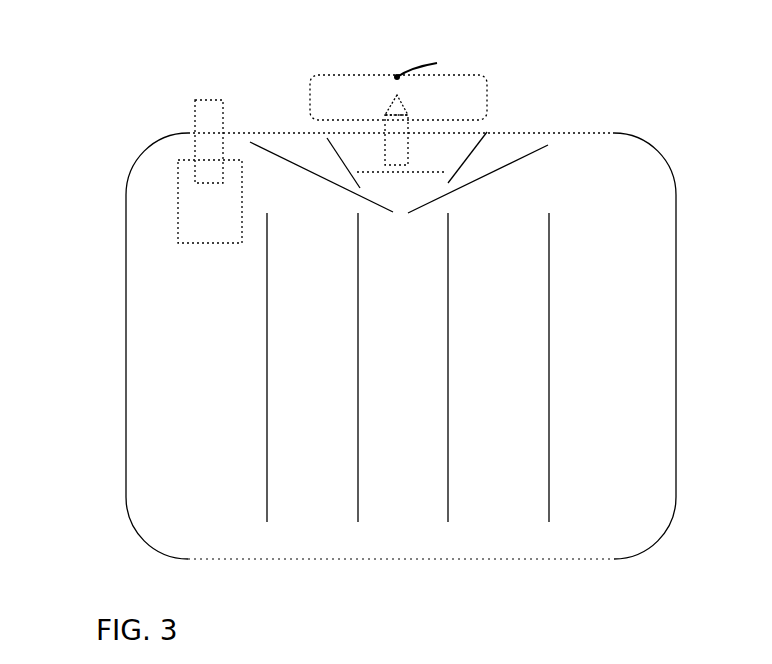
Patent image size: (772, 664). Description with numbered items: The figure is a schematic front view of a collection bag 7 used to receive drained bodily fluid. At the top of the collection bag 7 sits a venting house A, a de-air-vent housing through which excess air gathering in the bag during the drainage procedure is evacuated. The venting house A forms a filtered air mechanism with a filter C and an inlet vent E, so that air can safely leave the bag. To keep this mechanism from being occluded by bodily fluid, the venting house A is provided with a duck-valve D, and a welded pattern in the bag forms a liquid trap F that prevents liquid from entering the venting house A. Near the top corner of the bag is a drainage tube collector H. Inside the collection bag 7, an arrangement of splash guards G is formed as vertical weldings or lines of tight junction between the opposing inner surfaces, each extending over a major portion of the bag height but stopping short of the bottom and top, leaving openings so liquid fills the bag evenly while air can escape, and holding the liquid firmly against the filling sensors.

The collection bag 7 is at (100, 340).
The venting house A is at (327, 110).
The filter C is at (310, 92).
The duck-valve D is at (393, 110).
The inlet vent E is at (403, 157).
The liquid trap F is at (423, 205).
The splash-guard G is at (358, 316).
The drainage tube collector H is at (208, 131).